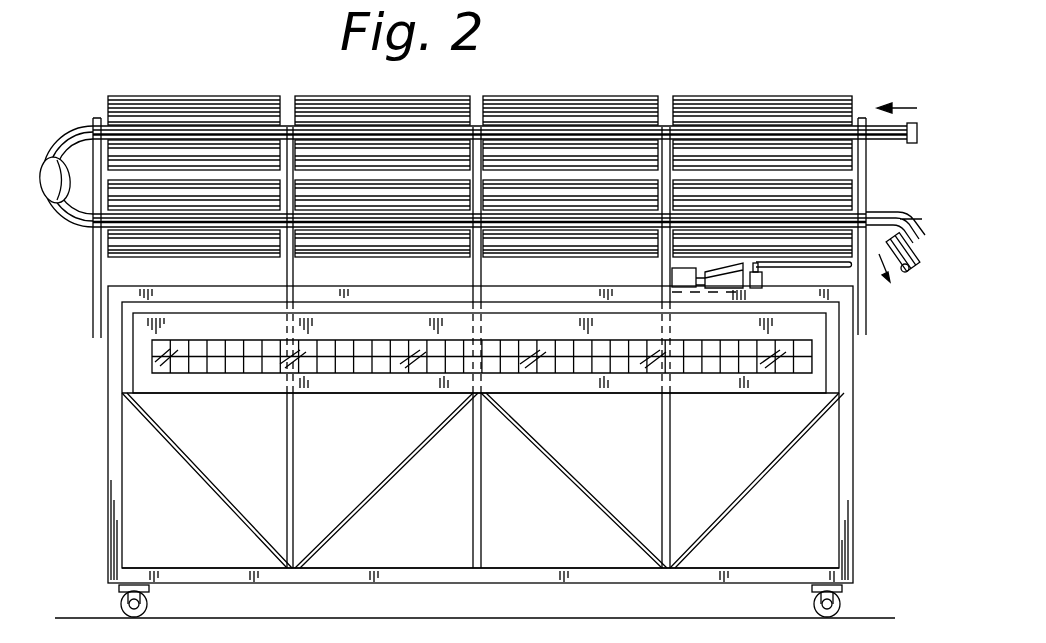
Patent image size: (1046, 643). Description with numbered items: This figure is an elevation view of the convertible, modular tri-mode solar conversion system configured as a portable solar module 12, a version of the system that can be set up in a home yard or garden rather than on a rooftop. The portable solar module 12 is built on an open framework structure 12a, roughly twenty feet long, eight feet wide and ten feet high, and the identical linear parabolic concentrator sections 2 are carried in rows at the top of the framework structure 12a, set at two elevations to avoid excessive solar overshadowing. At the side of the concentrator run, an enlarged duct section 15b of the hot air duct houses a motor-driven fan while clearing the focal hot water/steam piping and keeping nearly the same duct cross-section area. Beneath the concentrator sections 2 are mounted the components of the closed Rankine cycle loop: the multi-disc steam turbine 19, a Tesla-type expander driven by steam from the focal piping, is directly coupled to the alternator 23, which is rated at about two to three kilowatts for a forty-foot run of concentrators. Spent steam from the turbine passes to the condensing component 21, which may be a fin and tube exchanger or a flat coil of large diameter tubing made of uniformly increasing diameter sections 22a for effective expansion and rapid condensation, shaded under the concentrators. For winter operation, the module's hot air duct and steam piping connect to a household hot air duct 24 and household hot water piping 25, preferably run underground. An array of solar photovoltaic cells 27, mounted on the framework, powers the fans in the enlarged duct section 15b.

The linear parabolic concentrator section 2 is at (218, 96).
The portable solar module 12 is at (108, 487).
The open framework structure 12a is at (822, 447).
The enlarged duct section 15b is at (48, 172).
The multi-disc steam turbine 19 is at (724, 272).
The condensing component 21 is at (781, 265).
The uniformly increasing diameter sections 22a is at (838, 222).
The alternator 23 is at (673, 268).
The household hot air duct 24 is at (926, 280).
The household hot water piping 25 is at (928, 212).
The array of solar photovoltaic cells 27 is at (150, 360).